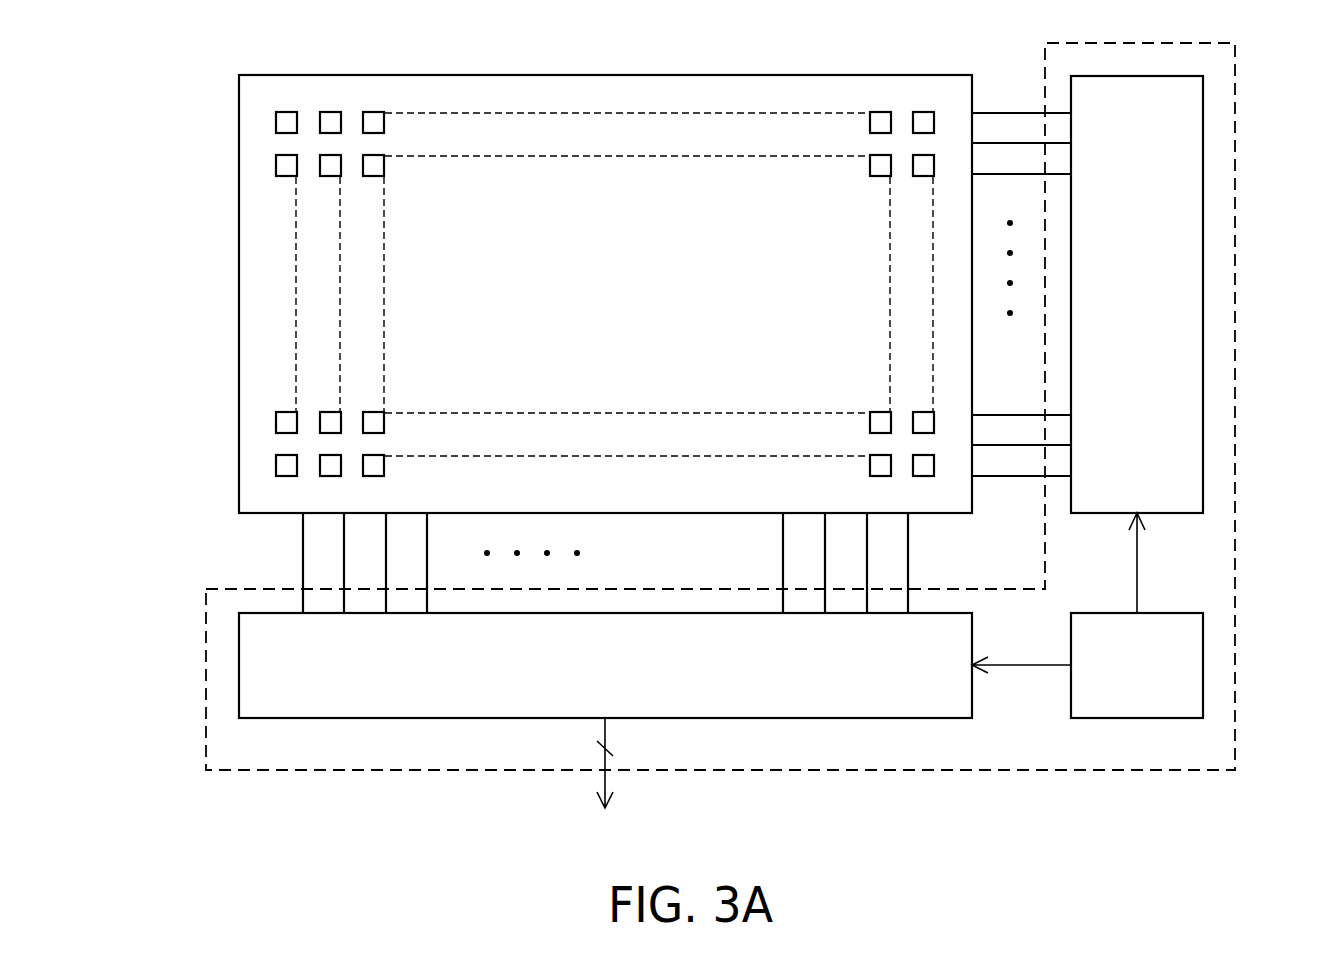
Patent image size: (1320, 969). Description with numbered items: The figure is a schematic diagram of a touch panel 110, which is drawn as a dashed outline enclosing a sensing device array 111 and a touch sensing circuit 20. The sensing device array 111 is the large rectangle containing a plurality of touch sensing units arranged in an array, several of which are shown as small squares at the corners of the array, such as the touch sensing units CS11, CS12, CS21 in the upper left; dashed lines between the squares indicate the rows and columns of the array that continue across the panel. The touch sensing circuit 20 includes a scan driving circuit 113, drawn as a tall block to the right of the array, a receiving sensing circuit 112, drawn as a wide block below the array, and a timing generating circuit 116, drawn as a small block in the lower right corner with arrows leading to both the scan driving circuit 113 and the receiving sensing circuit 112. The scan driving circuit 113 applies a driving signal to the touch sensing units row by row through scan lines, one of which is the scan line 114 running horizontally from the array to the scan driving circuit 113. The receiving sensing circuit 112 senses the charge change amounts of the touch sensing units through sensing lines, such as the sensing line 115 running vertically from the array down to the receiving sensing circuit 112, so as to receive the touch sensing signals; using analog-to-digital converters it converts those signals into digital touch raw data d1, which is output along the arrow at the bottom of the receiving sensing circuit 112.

The touch sensing circuit 20 is at (758, 437).
The touch panel 110 is at (1243, 829).
The sensing device array 111 is at (566, 258).
The receiving sensing circuit 112 is at (972, 700).
The scan driving circuit 113 is at (1203, 136).
The scan line 114 is at (998, 112).
The sensing line 115 is at (908, 552).
The timing generating circuit 116 is at (1203, 665).
The touch sensing unit CS11 is at (285, 110).
The touch sensing unit CS12 is at (328, 110).
The touch sensing unit CS21 is at (276, 164).
The touch raw data d1 is at (603, 784).